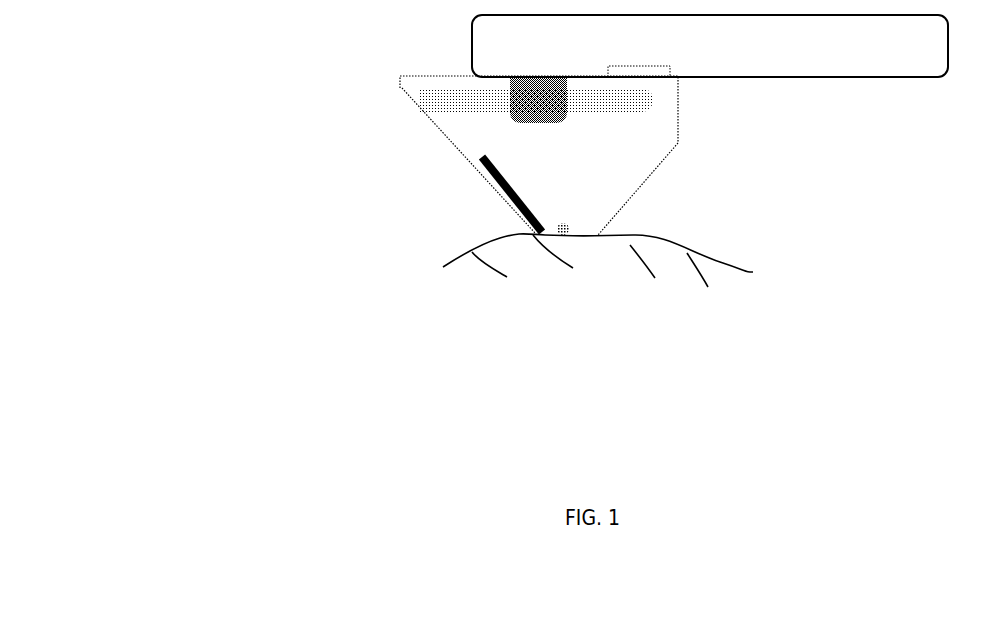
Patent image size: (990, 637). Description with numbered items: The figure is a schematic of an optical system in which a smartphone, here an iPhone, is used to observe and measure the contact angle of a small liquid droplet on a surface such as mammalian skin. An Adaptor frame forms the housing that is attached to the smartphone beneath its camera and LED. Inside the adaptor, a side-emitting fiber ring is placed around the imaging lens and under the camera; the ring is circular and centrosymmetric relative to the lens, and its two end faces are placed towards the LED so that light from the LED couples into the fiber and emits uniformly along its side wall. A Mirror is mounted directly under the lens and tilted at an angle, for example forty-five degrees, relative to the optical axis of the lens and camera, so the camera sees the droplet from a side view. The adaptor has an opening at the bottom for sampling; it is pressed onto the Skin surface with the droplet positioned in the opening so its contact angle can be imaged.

The smartphone iPhone is at (710, 46).
The element camera is at (537, 58).
The element LED is at (639, 55).
The adaptor housing Adaptor frame is at (680, 133).
The imaging lens is at (511, 113).
The mirror Mirror is at (500, 189).
The surface Skin surface is at (743, 265).